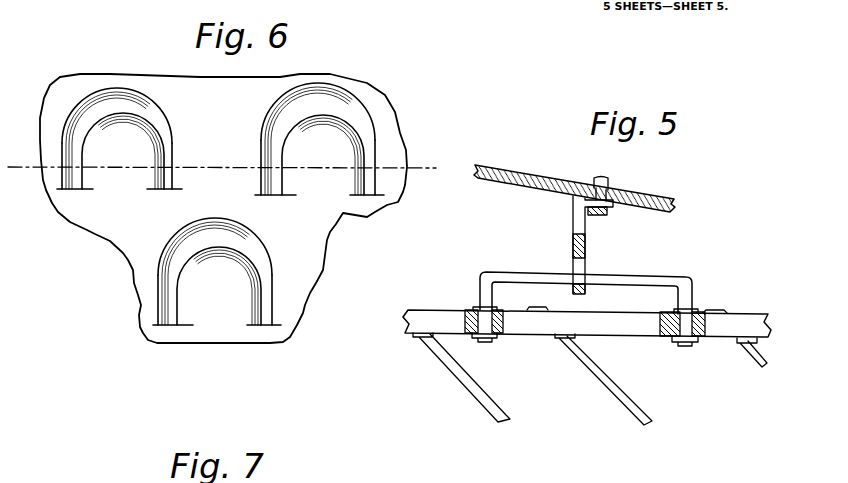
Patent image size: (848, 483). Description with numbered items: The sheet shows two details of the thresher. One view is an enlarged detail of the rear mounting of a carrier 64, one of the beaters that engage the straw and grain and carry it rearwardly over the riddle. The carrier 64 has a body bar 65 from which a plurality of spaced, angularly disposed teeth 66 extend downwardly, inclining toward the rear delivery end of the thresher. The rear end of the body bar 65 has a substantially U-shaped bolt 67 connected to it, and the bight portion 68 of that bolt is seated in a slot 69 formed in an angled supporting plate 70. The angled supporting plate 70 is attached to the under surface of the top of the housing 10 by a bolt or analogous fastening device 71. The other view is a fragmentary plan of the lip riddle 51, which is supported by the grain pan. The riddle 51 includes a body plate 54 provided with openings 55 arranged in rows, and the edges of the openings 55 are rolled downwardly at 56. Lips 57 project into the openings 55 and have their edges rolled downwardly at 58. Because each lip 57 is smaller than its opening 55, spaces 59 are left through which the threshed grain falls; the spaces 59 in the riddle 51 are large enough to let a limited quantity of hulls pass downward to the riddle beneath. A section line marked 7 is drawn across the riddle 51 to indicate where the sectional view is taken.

In FIG. 6, the section line 7- 7 is at (27, 152).
In FIG. 5, the housing 10 is at (575, 170).
In FIG. 6, the lip riddle 51 is at (250, 208).
In FIG. 6, the body plate 54 is at (308, 244).
In FIG. 6, the opening 55 is at (367, 148).
In FIG. 6, the rolled edge of opening 56 is at (67, 172).
In FIG. 6, the lip 57 is at (128, 153).
In FIG. 6, the rolled edge of lip 58 is at (160, 184).
In FIG. 6, the space 59 is at (113, 97).
In FIG. 5, the carrier 64 is at (452, 282).
In FIG. 5, the body bar 65 is at (538, 328).
In FIG. 5, the tooth 66 is at (478, 397).
In FIG. 5, the U-shaped bolt 67 is at (608, 284).
In FIG. 5, the bight portion 68 is at (645, 279).
In FIG. 5, the slot 69 is at (577, 265).
In FIG. 5, the angled supporting plate 70 is at (573, 222).
In FIG. 5, the bolt 71 is at (608, 185).